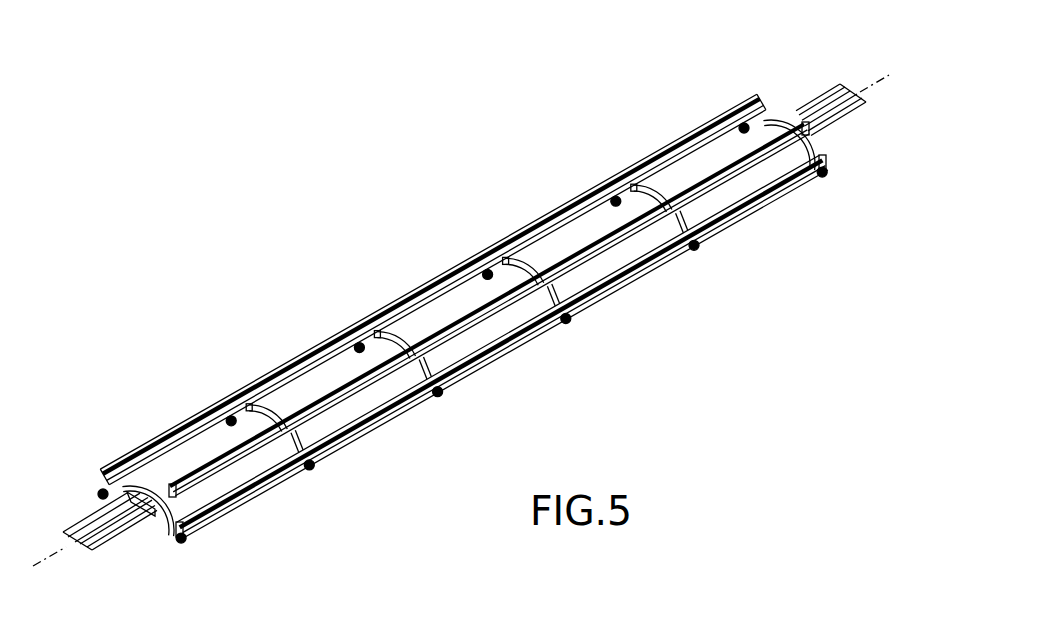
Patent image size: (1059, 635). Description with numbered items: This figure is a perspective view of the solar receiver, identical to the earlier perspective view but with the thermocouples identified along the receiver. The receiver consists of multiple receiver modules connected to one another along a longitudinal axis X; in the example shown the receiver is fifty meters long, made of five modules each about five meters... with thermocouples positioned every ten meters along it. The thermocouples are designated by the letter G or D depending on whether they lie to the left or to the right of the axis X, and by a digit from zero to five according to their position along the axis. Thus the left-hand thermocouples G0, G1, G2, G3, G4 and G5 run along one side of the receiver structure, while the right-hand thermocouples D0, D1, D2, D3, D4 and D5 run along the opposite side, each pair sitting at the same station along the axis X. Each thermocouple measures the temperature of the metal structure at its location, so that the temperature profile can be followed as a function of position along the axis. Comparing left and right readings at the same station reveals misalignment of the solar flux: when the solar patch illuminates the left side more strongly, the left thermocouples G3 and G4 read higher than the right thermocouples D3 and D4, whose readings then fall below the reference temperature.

The left thermocouple G0 is at (87, 486).
The left thermocouple G1 is at (212, 404).
The left thermocouple G2 is at (340, 331).
The left thermocouple G3 is at (468, 258).
The left thermocouple G4 is at (597, 184).
The left thermocouple G5 is at (724, 110).
The right thermocouple D0 is at (191, 554).
The right thermocouple D1 is at (319, 481).
The right thermocouple D2 is at (446, 408).
The right thermocouple D3 is at (575, 335).
The right thermocouple D4 is at (703, 261).
The right thermocouple D5 is at (832, 188).
The longitudinal axis X is at (862, 84).